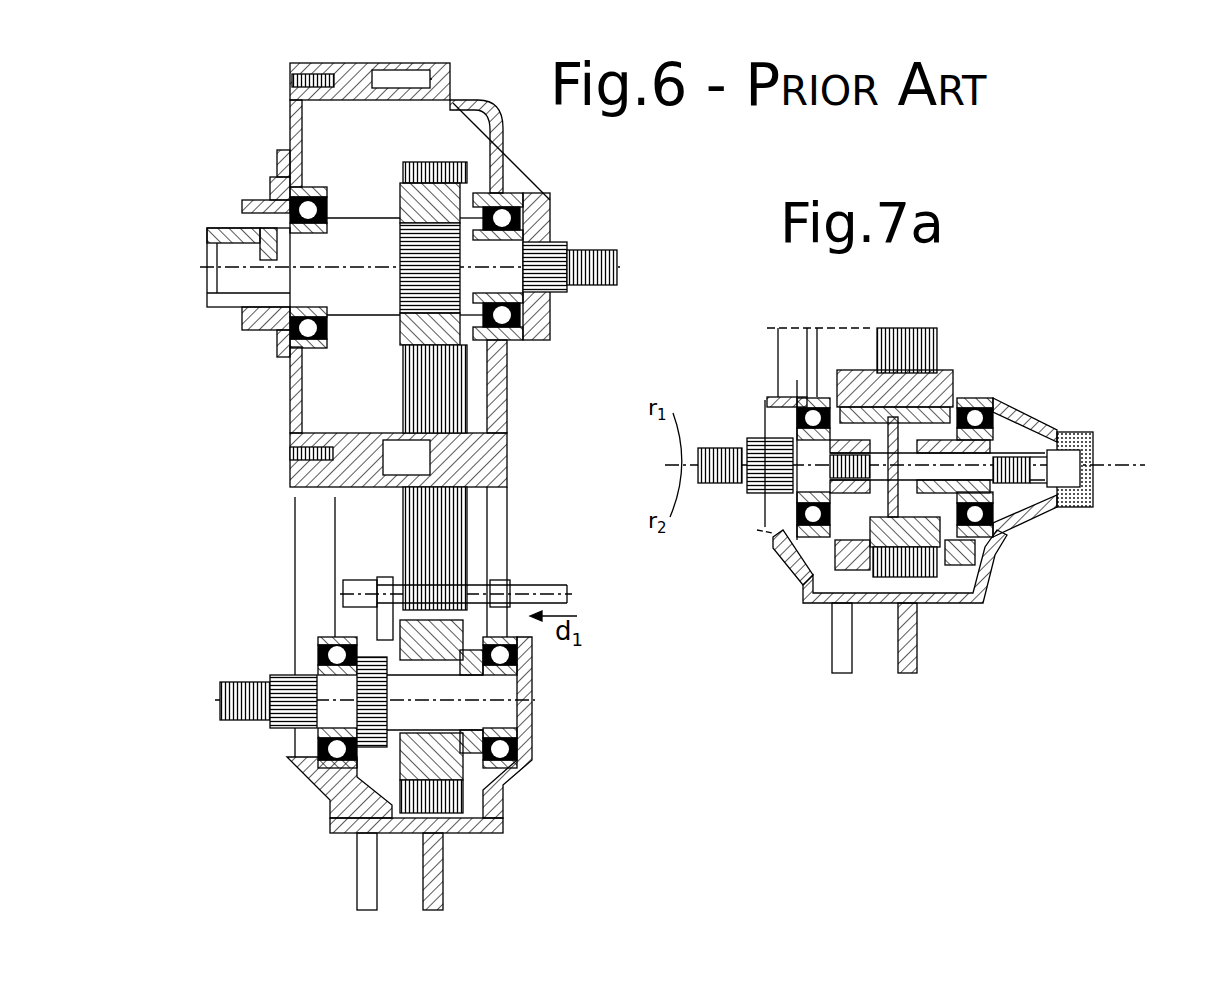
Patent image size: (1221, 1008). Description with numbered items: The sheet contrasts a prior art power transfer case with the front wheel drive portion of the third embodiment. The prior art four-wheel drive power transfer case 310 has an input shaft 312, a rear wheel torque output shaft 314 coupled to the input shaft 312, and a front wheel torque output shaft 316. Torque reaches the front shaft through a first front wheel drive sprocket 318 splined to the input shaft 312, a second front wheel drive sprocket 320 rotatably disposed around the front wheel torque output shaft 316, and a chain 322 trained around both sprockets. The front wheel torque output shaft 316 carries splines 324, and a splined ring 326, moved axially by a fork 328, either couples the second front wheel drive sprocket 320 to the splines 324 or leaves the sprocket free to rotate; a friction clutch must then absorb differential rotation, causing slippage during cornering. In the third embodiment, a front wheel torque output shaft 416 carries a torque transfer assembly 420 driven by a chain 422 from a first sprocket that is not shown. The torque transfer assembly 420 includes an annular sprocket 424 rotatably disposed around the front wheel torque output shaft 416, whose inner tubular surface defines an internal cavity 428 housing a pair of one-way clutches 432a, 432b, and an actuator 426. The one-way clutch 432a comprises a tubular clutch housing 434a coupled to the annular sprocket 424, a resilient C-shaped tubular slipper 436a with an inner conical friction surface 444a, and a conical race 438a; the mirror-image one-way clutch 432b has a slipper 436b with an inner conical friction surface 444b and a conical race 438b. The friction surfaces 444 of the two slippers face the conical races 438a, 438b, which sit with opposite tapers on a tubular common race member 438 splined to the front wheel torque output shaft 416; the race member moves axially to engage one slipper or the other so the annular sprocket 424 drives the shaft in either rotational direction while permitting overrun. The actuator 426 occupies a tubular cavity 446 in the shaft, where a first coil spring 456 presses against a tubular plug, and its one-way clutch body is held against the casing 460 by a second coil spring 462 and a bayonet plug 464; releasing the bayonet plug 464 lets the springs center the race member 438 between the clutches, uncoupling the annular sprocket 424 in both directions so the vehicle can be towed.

In FIG. 6, the prior art four-wheel drive power transfer case 310 is at (148, 906).
In FIG. 6, the input shaft 312 is at (237, 293).
In FIG. 6, the rear wheel torque output shaft 314 is at (573, 253).
In FIG. 6, the front wheel torque output shaft 316 is at (253, 683).
In FIG. 6, the first front wheel drive sprocket 318 is at (478, 208).
In FIG. 6, the second front wheel drive sprocket 320 is at (500, 795).
In FIG. 6, the chain 322 is at (507, 470).
In FIG. 6, the splines 324 is at (317, 742).
In FIG. 6, the splined ring 326 is at (377, 583).
In FIG. 6, the fork 328 is at (347, 767).
In FIG. 7A, the front wheel torque output shaft 416 is at (718, 493).
In FIG. 7A, the torque transfer assembly 420 is at (945, 578).
In FIG. 7A, the chain 422 is at (930, 397).
In FIG. 7A, the annular sprocket 424 is at (967, 397).
In FIG. 7A, the actuator 426 is at (1005, 530).
In FIG. 7A, the internal cavity 428 is at (783, 393).
In FIG. 7A, the one-way clutch 432a is at (913, 390).
In FIG. 7A, the one-way clutch 432b is at (860, 397).
In FIG. 7A, the tubular clutch housing 434a is at (977, 397).
In FIG. 7A, the resilient C-shaped tubular slipper 436a is at (990, 400).
In FIG. 7A, the resilient C-shaped tubular slipper 436b is at (783, 400).
In FIG. 7A, the tubular common race member 438 is at (917, 607).
In FIG. 7A, the conical race 438a is at (997, 407).
In FIG. 7A, the conical race 438b is at (870, 527).
In FIG. 7A, the pin 444 is at (900, 520).
In FIG. 7A, the inner conical friction surface 444a is at (987, 557).
In FIG. 7A, the inner conical friction surface 444b is at (803, 583).
In FIG. 7A, the tubular cavity 446 is at (805, 540).
In FIG. 7A, the first coil spring 456 is at (820, 457).
In FIG. 7A, the casing 460 is at (1037, 513).
In FIG. 7A, the second coil spring 462 is at (1087, 432).
In FIG. 7A, the bayonet plug 464 is at (1093, 480).